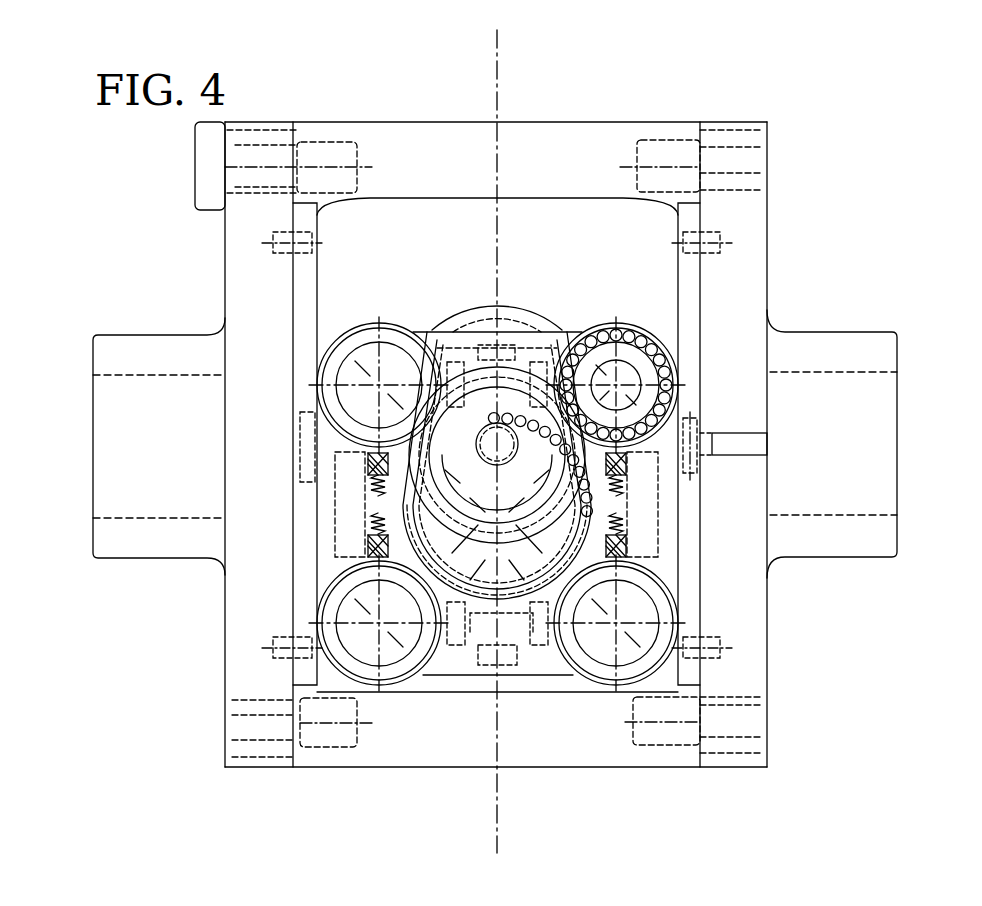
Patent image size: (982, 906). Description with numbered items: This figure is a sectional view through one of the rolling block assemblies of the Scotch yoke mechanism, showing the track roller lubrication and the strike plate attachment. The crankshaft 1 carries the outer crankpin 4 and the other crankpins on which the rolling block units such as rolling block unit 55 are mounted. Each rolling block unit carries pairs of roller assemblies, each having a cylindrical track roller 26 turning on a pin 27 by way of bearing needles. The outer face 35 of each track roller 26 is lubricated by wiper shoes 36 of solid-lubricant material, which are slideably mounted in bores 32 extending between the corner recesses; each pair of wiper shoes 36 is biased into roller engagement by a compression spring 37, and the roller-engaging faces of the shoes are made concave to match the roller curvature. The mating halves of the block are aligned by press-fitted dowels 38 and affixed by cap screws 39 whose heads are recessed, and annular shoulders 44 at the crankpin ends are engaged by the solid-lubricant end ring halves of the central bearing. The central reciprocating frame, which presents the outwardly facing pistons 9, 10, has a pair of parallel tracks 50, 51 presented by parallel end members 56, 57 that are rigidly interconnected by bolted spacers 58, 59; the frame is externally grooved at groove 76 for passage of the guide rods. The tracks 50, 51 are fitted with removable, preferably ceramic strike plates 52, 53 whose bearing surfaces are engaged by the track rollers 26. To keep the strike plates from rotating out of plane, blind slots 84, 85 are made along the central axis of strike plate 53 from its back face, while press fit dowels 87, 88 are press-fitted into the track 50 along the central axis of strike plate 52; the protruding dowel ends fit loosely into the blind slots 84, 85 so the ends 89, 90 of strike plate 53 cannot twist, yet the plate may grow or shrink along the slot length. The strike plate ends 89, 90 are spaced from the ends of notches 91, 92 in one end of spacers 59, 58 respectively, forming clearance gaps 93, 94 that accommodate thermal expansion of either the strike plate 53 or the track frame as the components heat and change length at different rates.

The crankshaft 1 is at (463, 303).
The outer crankpin 4 is at (505, 300).
The outwardly facing piston 9 is at (118, 345).
The outwardly facing piston 10 is at (875, 350).
The track roller 26 is at (633, 332).
The pin 27 is at (588, 323).
The bore 32 is at (628, 500).
The outer face of track roller 35 is at (607, 320).
The wiper shoe 36 is at (672, 433).
The compression spring 37 is at (617, 505).
The press-fitted dowel 38 is at (508, 653).
The cap screw 39 is at (468, 655).
The annular shoulder 44 is at (372, 507).
The track 50 is at (287, 355).
The track 51 is at (700, 280).
The strike plate 52 is at (298, 290).
The strike plate 53 is at (680, 252).
The rolling block unit 55 is at (368, 327).
The end member 56 is at (235, 228).
The end member 57 is at (750, 283).
The bolted spacer 58 is at (382, 140).
The bolted spacer 59 is at (518, 752).
The external groove 76 is at (263, 127).
The blind slot 84 is at (702, 270).
The blind slot 85 is at (703, 658).
The press fit dowel 87 is at (718, 237).
The press fit dowel 88 is at (720, 645).
The strike plate end 89 is at (703, 680).
The strike plate end 90 is at (693, 232).
The notch 91 is at (678, 688).
The notch 92 is at (677, 203).
The clearance gap 93 is at (693, 203).
The clearance gap 94 is at (691, 688).